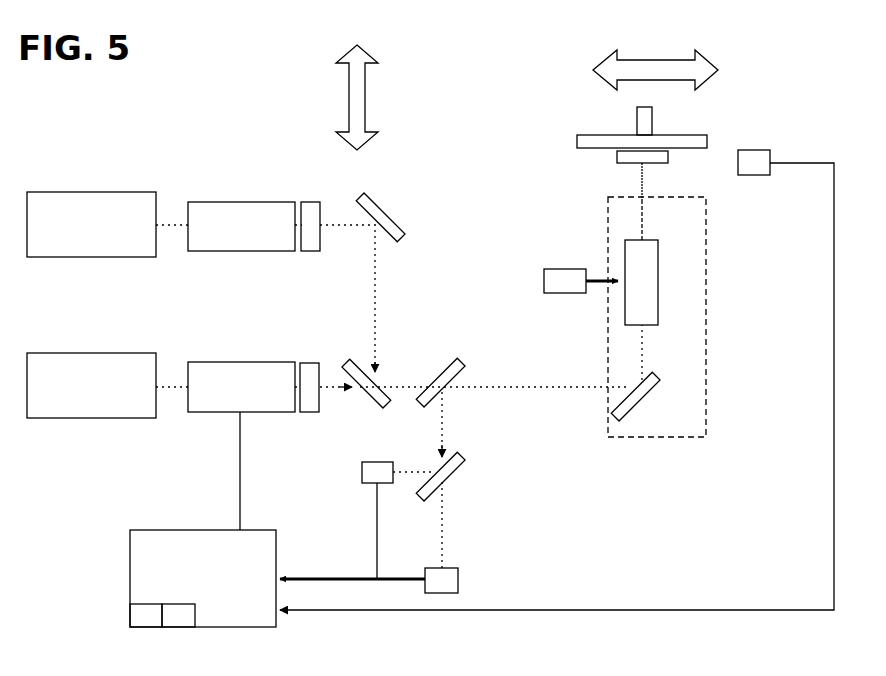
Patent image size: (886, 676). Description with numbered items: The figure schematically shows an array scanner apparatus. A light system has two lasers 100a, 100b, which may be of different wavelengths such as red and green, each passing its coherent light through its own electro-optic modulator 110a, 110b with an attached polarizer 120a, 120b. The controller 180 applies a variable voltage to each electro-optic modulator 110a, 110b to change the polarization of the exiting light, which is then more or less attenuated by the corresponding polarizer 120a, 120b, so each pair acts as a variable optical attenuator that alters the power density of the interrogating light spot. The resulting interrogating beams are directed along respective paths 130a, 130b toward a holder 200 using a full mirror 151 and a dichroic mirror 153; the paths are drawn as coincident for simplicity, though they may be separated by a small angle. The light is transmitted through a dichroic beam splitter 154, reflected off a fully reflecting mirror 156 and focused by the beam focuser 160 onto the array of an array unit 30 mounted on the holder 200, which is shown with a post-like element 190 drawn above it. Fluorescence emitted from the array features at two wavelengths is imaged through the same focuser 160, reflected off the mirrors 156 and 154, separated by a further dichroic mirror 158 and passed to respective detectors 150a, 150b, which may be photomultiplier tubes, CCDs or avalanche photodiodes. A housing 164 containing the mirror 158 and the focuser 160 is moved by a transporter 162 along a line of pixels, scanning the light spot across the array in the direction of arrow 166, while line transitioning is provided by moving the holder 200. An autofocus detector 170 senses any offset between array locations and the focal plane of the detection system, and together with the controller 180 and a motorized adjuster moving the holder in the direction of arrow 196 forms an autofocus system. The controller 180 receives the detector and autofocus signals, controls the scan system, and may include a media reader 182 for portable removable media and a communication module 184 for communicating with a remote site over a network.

The laser 100a is at (91, 375).
The laser 100b is at (91, 214).
The electro-optic modulator 110a is at (222, 361).
The electro-optic modulator 110b is at (222, 201).
The polarizer 120a is at (316, 363).
The polarizer 120b is at (318, 202).
The path 130a is at (636, 174).
The path 130b is at (652, 174).
The detector 150a is at (362, 470).
The detector 150b is at (458, 580).
The full mirror 151 is at (386, 220).
The dichroic mirror 153 is at (388, 378).
The dichroic beam splitter 154 is at (453, 382).
The fully reflecting mirror 156 is at (640, 408).
The dichroic mirror 158 is at (455, 478).
The beam focuser 160 is at (658, 282).
The transporter 162 is at (544, 272).
The housing 164 is at (706, 325).
The arrow 166 is at (660, 57).
The autofocus detector 170 is at (557, 367).
The controller 180 is at (203, 594).
The media reader 182 is at (119, 616).
The communication module 184 is at (182, 631).
The spindle 190 is at (653, 118).
The arrow 196 is at (380, 82).
The holder 200 is at (577, 143).
The array unit 30 is at (604, 160).